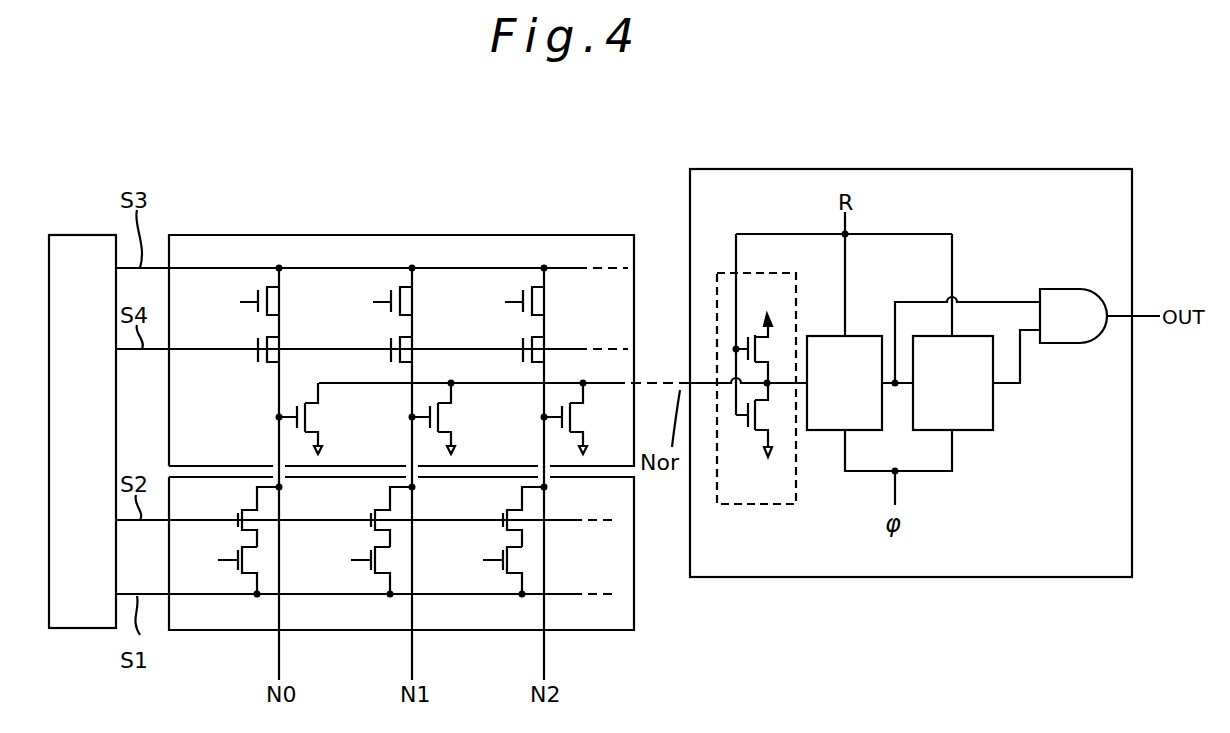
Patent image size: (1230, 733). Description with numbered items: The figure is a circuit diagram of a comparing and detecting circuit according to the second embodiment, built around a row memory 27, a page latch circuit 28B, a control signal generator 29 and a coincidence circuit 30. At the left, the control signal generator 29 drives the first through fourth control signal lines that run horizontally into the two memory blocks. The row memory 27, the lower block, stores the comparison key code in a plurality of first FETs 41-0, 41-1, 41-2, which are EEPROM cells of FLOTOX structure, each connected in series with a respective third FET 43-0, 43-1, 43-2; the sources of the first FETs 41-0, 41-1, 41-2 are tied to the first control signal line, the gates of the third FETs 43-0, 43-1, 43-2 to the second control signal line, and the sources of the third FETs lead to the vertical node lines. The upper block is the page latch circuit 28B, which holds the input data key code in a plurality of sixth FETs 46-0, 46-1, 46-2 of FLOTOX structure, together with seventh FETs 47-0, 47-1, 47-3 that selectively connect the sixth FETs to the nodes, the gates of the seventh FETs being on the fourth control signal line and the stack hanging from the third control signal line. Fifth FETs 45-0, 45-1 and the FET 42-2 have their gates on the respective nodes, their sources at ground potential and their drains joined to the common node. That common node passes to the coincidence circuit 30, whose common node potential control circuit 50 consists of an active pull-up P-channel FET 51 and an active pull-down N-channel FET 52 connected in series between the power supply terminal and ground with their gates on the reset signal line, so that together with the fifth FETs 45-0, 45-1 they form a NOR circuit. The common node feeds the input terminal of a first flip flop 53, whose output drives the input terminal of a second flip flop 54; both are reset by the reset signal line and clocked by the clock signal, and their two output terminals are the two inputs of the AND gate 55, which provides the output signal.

The control signal generator 29 is at (86, 235).
The page latch circuit 28B is at (605, 235).
The row memory 27 is at (620, 630).
The coincidence circuit 30 is at (985, 169).
The common node potential control circuit 50 is at (776, 422).
The active pull-up P-channel FET 51 is at (760, 345).
The active pull-down N-channel FET 52 is at (768, 420).
The first flip flop 53 is at (872, 336).
The second flip flop 54 is at (995, 418).
The AND gate 55 is at (1072, 289).
The sixth FET 46-0 is at (258, 288).
The sixth FET 46-1 is at (391, 288).
The sixth FET 46-2 is at (523, 288).
The seventh FET 47-0 is at (258, 333).
The seventh FET 47-1 is at (391, 343).
The seventh FET 47-3 is at (523, 343).
The fifth FET 45-0 is at (298, 428).
The fifth FET 45-1 is at (430, 425).
The second FET 42-2 is at (560, 425).
The third FET 43-0 is at (239, 513).
The third FET 43-1 is at (368, 532).
The third FET 43-2 is at (500, 532).
The first FET 41-0 is at (257, 560).
The first FET 41-1 is at (390, 560).
The first FET 41-2 is at (522, 560).